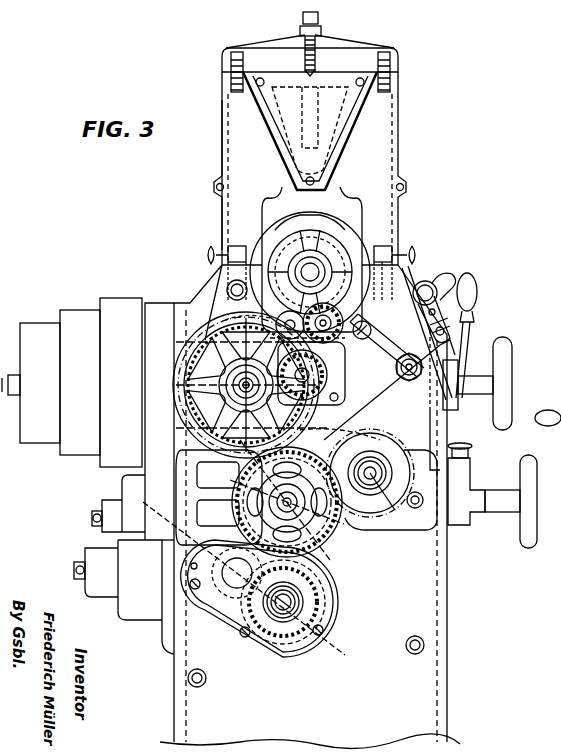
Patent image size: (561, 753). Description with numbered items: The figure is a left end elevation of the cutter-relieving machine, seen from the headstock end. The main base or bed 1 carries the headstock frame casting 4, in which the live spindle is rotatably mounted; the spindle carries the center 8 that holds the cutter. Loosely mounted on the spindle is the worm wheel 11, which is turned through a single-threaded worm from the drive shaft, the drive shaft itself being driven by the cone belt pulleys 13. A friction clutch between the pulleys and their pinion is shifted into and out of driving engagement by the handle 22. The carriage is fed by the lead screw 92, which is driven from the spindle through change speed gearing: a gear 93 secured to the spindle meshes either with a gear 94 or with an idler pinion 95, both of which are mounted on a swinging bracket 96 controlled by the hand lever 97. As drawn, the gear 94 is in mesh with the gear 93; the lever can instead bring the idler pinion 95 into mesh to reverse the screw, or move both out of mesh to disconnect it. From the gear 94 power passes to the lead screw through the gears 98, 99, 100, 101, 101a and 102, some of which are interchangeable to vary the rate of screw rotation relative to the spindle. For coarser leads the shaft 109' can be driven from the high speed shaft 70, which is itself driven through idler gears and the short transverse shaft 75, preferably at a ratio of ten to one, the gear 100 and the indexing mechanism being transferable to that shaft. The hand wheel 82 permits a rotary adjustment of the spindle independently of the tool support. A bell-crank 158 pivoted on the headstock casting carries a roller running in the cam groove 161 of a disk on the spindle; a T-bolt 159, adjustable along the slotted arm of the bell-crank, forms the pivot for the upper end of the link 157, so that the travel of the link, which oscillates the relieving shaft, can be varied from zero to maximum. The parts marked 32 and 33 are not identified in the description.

The main base or bed 1 is at (447, 620).
The frame casting 4 is at (218, 292).
The center 8 is at (248, 308).
The worm wheel 11 is at (155, 523).
The cone belt pulleys 13 is at (76, 310).
The handle 22 is at (478, 292).
The triangular plate 32 is at (345, 120).
The supporting bracket 33 is at (228, 160).
The high speed shaft 70 is at (237, 585).
The short transverse shaft 75 is at (532, 522).
The hand wheel 82 is at (511, 354).
The screw 92 is at (372, 521).
The gear 93 is at (325, 242).
The gear 94 is at (360, 306).
The idler pinion 95 is at (283, 312).
The swinging bracket 96 is at (365, 360).
The hand lever 97 is at (454, 277).
The gear 98 is at (340, 389).
The gear 99 is at (190, 362).
The gear 100 is at (172, 385).
The gear 101 is at (242, 492).
The gear 101a is at (340, 424).
The gear 102 is at (318, 532).
The shaft 109' is at (318, 602).
The link 157 is at (374, 404).
The bell-crank 158 is at (448, 318).
The T-bolt 159 is at (452, 348).
The cam groove 161 is at (412, 264).